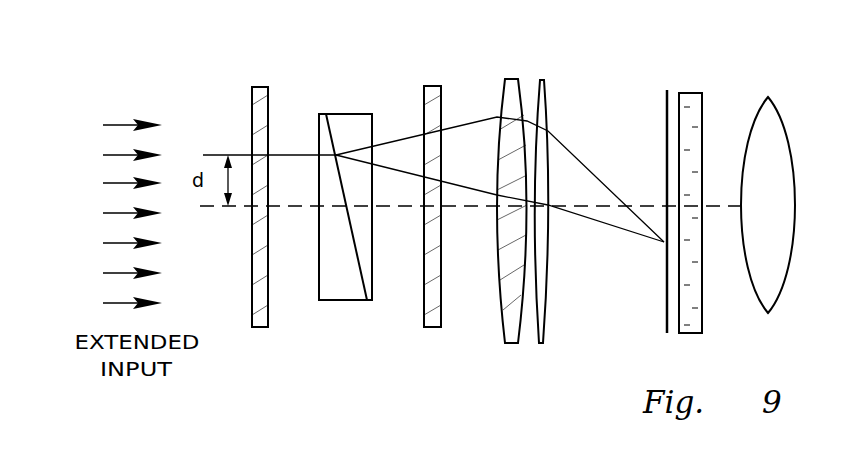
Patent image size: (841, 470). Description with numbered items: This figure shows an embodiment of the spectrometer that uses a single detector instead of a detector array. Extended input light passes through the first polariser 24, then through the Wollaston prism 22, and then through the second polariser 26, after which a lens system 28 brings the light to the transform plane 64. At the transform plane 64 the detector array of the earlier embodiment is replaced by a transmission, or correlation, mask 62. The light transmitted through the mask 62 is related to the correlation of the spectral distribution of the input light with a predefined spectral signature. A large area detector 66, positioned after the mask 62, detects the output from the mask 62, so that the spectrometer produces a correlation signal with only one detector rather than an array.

The Wollaston prism 22 is at (345, 300).
The polariser 24 is at (260, 87).
The polariser 26 is at (433, 86).
The lens system 28 is at (534, 74).
The transmission mask 62 is at (692, 93).
The transform plane 64 is at (664, 305).
The large area detector 66 is at (752, 301).